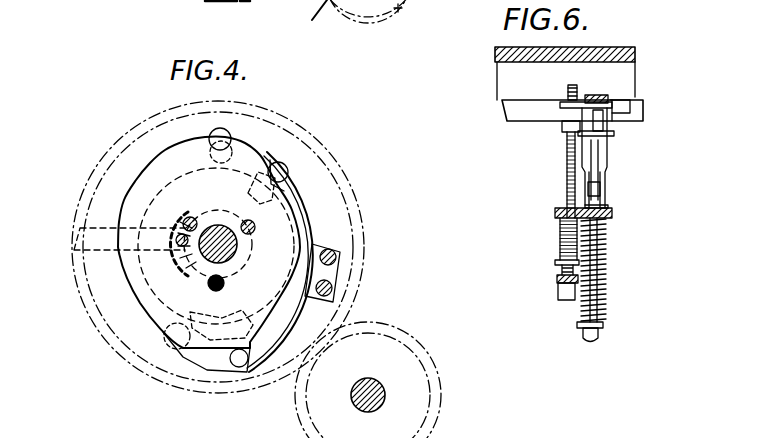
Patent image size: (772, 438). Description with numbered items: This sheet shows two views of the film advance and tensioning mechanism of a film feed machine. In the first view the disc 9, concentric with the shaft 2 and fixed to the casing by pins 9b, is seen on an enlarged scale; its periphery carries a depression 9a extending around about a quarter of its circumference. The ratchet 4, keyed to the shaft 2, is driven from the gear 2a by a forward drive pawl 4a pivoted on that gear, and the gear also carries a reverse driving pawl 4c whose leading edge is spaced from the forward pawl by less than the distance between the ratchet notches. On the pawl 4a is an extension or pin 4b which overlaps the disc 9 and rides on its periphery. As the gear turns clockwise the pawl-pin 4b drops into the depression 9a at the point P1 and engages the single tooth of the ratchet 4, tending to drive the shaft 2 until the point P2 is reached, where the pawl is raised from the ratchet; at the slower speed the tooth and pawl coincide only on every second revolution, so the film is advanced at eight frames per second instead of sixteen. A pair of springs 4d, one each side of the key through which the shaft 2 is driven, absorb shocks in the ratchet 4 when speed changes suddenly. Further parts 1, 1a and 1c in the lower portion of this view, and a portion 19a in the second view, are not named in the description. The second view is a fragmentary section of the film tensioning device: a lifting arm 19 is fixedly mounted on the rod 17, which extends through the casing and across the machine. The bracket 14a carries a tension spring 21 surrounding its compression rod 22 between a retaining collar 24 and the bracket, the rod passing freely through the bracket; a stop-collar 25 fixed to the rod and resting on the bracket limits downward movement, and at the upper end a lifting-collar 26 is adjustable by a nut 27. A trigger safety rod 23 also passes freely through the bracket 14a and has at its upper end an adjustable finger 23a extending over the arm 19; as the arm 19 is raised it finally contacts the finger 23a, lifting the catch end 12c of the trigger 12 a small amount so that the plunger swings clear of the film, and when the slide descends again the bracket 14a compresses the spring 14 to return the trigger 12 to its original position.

In FIG. 4, the pulley shaft 1 is at (355, 397).
In FIG. 4, the pulley rim 1a is at (441, 391).
In FIG. 4, the pulley portion 1c is at (395, 32).
In FIG. 4, the shaft 2 is at (232, 250).
In FIG. 4, the gear 2a is at (103, 330).
In FIG. 4, the ratchet 4 is at (140, 165).
In FIG. 4, the forward drive pawl 4a is at (275, 140).
In FIG. 4, the pin 4b is at (290, 162).
In FIG. 4, the reverse driving pawl 4c is at (210, 360).
In FIG. 4, the springs 4d is at (76, 241).
In FIG. 4, the disc 9 is at (140, 187).
In FIG. 4, the depression 9a is at (312, 201).
In FIG. 4, the pins 9b is at (192, 224).
In FIG. 4, the point P¹ P1 is at (252, 194).
In FIG. 4, the point P² P2 is at (257, 313).
In FIG. 6, the trigger device 12 is at (557, 279).
In FIG. 6, the catch member 12c is at (562, 300).
In FIG. 6, the spring 14 is at (559, 245).
In FIG. 6, the bracket 14a is at (556, 212).
In FIG. 6, the rod 17 is at (520, 108).
In FIG. 6, the lifting arm 19 is at (586, 155).
In FIG. 6, the bracket leg 19a is at (607, 183).
In FIG. 6, the tension spring 21 is at (606, 256).
In FIG. 6, the compression rod 22 is at (585, 181).
In FIG. 6, the trigger safety rod 23 is at (567, 167).
In FIG. 6, the adjustable finger 23a is at (612, 110).
In FIG. 6, the retaining collar 24 is at (604, 325).
In FIG. 6, the stop-collar 25 is at (612, 212).
In FIG. 6, the lifting-collar 26 is at (606, 136).
In FIG. 6, the nut 27 is at (613, 130).